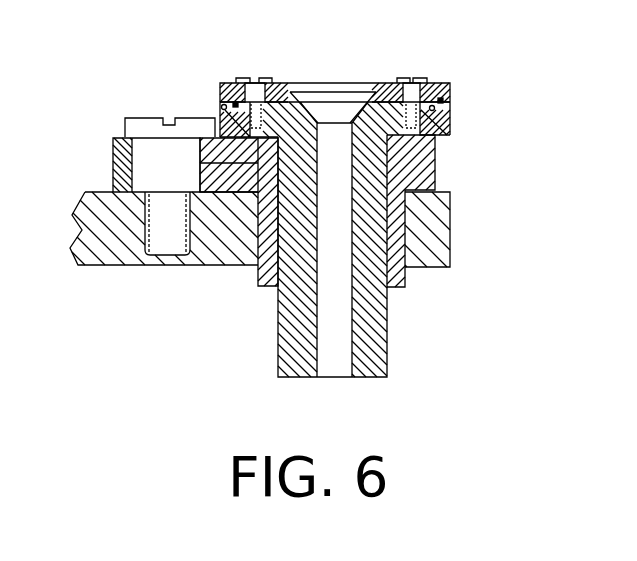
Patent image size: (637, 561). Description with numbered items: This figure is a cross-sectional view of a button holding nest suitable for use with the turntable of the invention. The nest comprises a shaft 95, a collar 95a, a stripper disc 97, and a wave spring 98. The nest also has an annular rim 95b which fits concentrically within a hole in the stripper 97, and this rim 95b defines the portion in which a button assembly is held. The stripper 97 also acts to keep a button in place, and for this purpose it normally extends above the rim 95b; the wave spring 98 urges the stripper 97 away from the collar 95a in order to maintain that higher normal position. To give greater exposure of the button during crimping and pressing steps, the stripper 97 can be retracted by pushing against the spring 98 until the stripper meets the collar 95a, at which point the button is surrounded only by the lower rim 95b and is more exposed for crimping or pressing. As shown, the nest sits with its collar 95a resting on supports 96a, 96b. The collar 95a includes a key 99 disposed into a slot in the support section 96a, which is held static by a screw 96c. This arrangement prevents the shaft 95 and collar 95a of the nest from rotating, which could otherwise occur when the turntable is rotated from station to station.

The shaft 95 is at (368, 333).
The collar 95a is at (442, 122).
The annular rim 95b is at (367, 83).
The support 96a is at (220, 198).
The support 96b is at (420, 170).
The screw 96c is at (122, 137).
The stripper disc 97 is at (452, 84).
The wave spring 98 is at (221, 83).
The key 99 is at (223, 106).